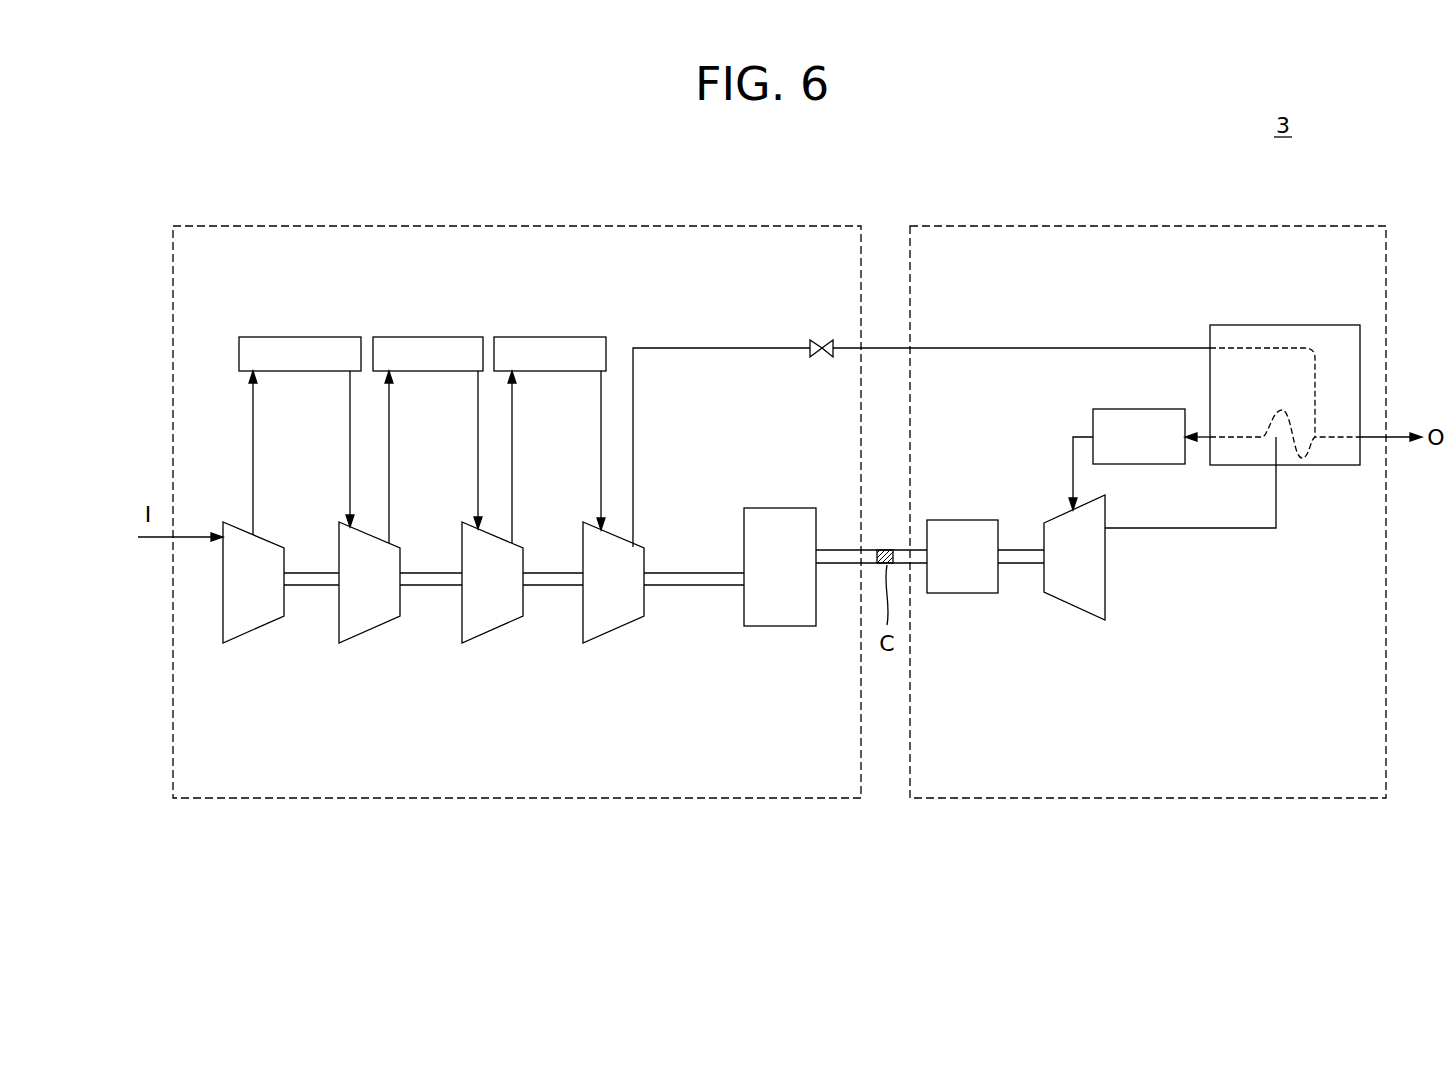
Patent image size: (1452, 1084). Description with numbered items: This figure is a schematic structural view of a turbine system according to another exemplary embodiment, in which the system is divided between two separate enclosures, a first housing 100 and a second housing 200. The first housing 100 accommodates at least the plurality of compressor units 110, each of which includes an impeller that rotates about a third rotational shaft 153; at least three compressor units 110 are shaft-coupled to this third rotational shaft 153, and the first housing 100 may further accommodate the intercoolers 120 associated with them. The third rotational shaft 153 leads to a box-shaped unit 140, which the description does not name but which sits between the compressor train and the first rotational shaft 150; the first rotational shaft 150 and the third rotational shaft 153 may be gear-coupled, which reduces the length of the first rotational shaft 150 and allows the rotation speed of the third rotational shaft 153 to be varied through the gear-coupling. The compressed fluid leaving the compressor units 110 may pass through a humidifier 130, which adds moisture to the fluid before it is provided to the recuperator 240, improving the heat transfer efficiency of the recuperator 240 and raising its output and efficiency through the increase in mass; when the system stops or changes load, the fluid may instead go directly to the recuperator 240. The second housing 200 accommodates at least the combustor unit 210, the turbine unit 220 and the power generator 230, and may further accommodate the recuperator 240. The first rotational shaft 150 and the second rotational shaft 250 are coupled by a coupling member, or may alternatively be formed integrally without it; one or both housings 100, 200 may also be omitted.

The first housing 100 is at (518, 225).
The second housing 200 is at (1152, 225).
The compressor unit 110 is at (253, 631).
The intercooler 120 is at (312, 337).
The humidifier 130 is at (822, 337).
The motor 140 is at (780, 627).
The first rotational shaft 150 is at (847, 553).
The third rotational shaft 153 is at (695, 587).
The combustor unit 210 is at (1138, 409).
The turbine unit 220 is at (1073, 606).
The power generator 230 is at (963, 594).
The recuperator 240 is at (1288, 325).
The second rotational shaft 250 is at (1017, 565).